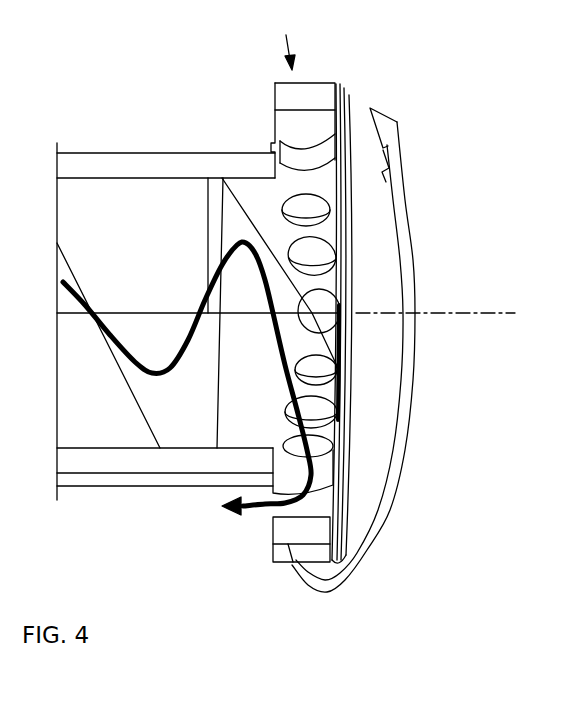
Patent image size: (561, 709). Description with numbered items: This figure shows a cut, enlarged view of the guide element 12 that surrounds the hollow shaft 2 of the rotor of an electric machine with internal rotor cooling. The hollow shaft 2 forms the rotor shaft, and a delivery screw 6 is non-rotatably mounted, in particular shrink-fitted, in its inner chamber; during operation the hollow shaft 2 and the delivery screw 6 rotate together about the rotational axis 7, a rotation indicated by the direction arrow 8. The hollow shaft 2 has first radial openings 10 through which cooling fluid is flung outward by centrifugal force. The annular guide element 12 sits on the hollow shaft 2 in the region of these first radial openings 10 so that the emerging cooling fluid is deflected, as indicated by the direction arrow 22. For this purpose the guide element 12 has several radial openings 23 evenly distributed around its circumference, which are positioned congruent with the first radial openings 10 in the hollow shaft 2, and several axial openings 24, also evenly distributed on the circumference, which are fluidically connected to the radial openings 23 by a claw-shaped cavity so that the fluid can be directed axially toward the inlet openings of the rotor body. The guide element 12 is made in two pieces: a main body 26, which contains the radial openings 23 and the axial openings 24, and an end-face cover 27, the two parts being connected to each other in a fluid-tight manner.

The hollow shaft 2 is at (132, 163).
The delivery screw 6 is at (173, 433).
The rotational axis 7 is at (486, 311).
The direction arrow 8 is at (408, 343).
The first radial openings 10 is at (316, 173).
The guide element 12 is at (286, 42).
The direction arrow 22 is at (308, 468).
The radial openings 23 is at (318, 152).
The axial openings 24 is at (274, 125).
The main body 26 is at (318, 93).
The end-face cover 27 is at (341, 86).